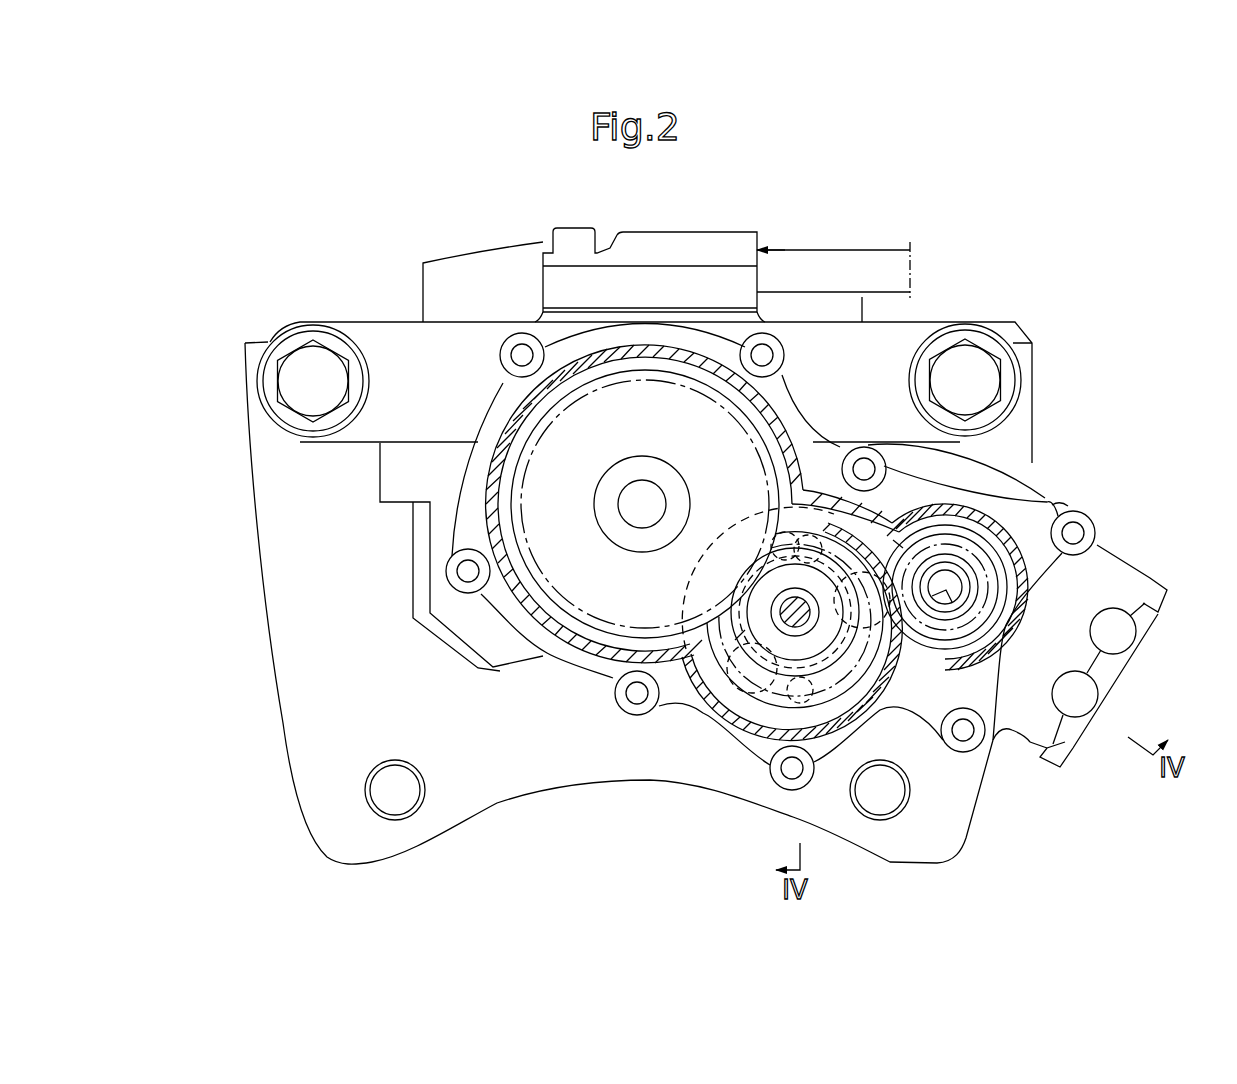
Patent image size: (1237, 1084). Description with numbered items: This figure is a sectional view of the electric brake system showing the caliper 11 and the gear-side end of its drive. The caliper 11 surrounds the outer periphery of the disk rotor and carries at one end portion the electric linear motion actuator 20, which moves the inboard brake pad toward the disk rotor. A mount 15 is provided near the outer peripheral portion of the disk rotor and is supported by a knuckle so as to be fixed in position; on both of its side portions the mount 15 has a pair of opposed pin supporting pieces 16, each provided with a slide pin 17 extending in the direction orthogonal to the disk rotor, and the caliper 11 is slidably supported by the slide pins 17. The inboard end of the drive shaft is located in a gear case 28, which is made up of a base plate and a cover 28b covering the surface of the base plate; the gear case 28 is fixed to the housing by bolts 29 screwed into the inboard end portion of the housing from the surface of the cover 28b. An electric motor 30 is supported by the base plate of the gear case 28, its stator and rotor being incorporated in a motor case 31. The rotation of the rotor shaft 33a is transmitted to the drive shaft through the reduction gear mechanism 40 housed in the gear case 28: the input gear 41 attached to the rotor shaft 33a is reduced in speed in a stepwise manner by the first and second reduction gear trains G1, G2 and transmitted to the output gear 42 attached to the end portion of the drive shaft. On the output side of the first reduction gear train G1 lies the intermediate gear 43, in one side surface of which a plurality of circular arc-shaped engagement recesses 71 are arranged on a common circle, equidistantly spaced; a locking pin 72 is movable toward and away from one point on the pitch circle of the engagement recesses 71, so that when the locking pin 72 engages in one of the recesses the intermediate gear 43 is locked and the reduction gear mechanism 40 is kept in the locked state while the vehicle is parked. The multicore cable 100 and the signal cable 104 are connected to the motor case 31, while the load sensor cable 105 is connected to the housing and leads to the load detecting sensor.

The caliper 11 is at (458, 251).
The mount 15 is at (250, 505).
The pin supporting pieces 16 is at (265, 452).
The slide pin 17 is at (318, 365).
The electric linear motion actuator 20 is at (750, 228).
The gear case 28 is at (725, 545).
The cover 28b is at (517, 410).
The bolts 29 is at (445, 567).
The electric motor 30 is at (1037, 477).
The motor case 31 is at (1027, 723).
The rotor shaft 33a is at (1050, 499).
The reduction gear mechanism 40 is at (748, 418).
The input gear 41 is at (953, 577).
The output gear 42 is at (593, 587).
The intermediate gear 43 is at (870, 686).
The engagement recesses 71 is at (747, 683).
The locking pin 72 is at (793, 677).
The multicore cable 100 is at (1088, 708).
The signal cable 104 is at (1130, 640).
The load sensor cable 105 is at (848, 262).
The first reduction gear train G1 is at (898, 543).
The second reduction gear train G2 is at (722, 619).